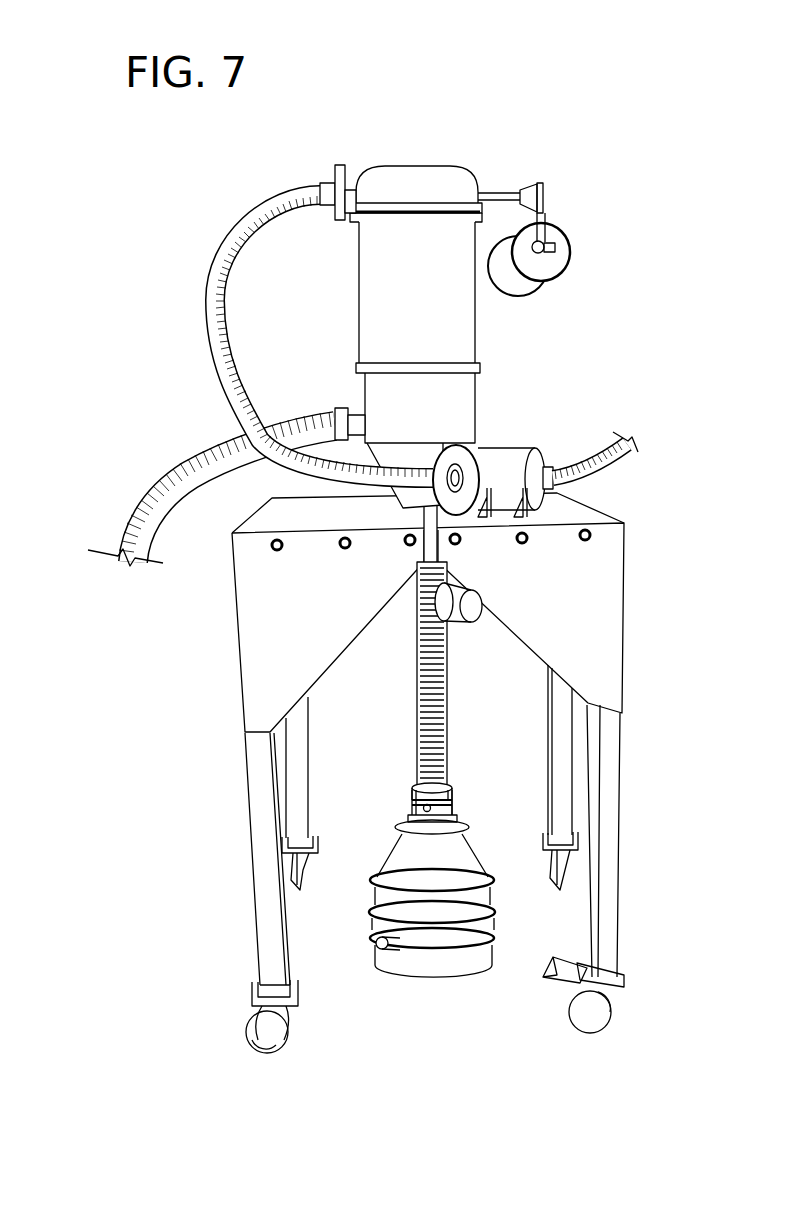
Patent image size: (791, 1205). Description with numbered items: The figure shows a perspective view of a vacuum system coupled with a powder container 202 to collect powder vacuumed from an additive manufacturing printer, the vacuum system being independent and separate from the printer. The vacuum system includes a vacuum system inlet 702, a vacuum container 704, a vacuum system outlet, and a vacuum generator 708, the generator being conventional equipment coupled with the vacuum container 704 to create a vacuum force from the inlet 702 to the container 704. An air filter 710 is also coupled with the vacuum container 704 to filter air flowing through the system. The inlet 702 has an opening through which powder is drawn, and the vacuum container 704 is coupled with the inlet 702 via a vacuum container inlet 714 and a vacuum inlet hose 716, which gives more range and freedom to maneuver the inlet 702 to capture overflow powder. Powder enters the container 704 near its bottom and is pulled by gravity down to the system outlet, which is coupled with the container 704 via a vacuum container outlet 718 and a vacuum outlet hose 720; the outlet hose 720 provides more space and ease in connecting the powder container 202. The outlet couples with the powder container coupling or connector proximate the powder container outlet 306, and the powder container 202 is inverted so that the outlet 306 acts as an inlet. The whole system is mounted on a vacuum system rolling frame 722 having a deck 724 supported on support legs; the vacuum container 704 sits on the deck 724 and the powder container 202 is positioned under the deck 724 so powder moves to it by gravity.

The powder container 202 is at (404, 966).
The powder container outlet 306 is at (457, 790).
The vacuum system inlet 702 is at (122, 562).
The vacuum container 704 is at (443, 330).
The vacuum generator 708 is at (503, 450).
The air filter 710 is at (565, 238).
The vacuum container inlet 714 is at (340, 408).
The vacuum inlet hose 716 is at (150, 481).
The vacuum container outlet 718 is at (413, 503).
The vacuum outlet hose 720 is at (438, 673).
The vacuum system rolling frame 722 is at (253, 675).
The deck 724 is at (573, 508).